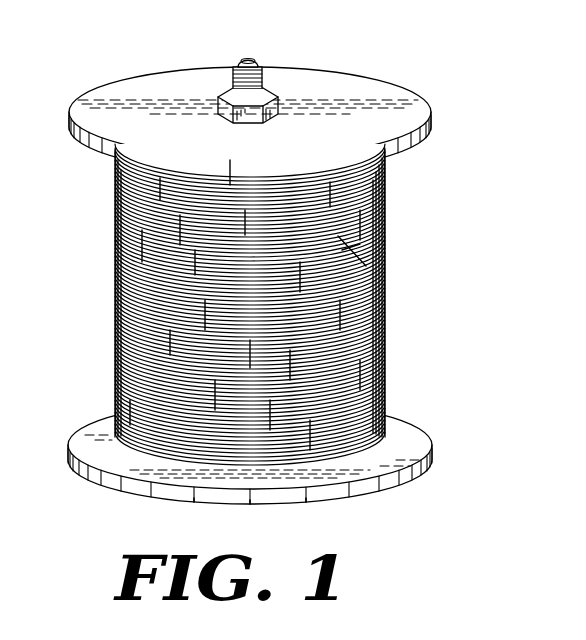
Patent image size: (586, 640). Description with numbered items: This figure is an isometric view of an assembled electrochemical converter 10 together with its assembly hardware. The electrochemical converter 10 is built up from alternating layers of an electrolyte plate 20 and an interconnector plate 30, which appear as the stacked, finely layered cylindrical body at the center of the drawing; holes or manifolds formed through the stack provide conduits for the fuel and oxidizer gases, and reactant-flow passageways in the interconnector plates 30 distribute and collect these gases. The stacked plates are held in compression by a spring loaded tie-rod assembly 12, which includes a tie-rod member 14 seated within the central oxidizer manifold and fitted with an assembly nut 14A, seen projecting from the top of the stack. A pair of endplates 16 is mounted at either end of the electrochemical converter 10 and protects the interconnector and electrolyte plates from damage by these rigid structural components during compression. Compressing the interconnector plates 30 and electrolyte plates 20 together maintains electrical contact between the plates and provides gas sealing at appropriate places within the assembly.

The electrochemical converter 10 is at (266, 256).
The spring loaded tie-rod assembly 12 is at (265, 256).
The tie-rod member 14 is at (288, 72).
The assembly nut 14A is at (280, 104).
The endplates 16 is at (112, 92).
The electrolyte plate 20 is at (385, 240).
The interconnector plate 30 is at (385, 268).